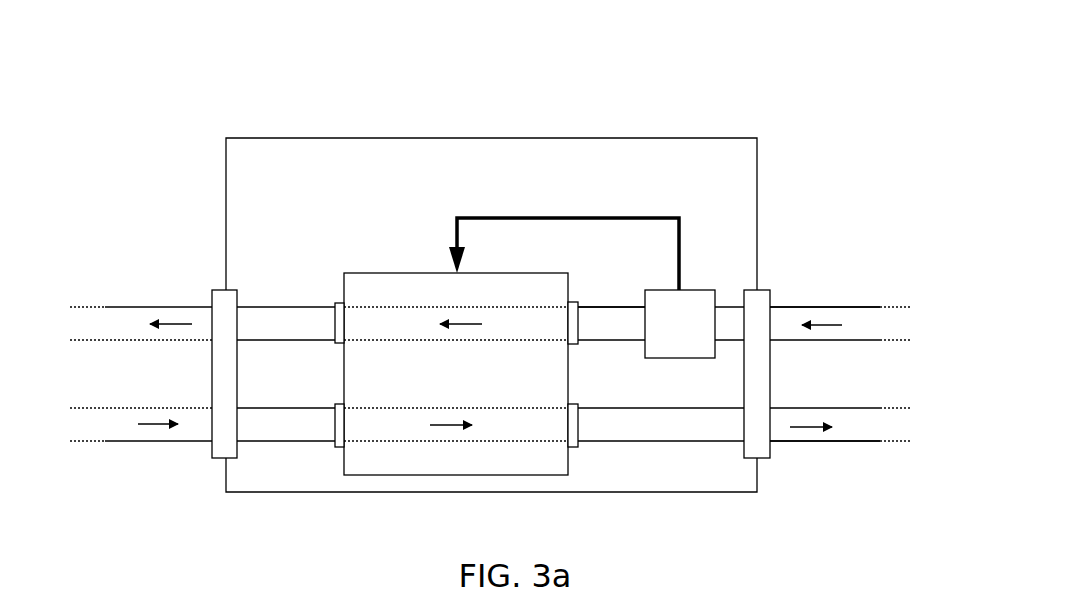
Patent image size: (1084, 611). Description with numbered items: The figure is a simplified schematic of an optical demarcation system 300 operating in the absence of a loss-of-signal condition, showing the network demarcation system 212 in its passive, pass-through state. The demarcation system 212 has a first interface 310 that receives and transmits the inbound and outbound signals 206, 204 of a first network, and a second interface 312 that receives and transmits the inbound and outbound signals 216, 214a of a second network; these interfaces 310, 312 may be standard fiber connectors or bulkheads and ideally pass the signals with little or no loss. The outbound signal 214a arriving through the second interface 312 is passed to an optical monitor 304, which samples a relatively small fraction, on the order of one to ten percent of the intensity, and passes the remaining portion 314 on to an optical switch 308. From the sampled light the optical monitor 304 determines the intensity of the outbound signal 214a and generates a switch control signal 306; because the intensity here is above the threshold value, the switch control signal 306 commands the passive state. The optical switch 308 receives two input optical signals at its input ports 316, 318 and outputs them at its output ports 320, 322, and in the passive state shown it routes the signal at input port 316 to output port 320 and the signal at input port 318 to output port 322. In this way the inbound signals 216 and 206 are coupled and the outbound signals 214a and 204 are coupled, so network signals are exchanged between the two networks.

The system 300 is at (847, 96).
The outbound signal of the first network 204 is at (105, 306).
The inbound signal of the first network 206 is at (106, 442).
The network demarcation system 212 is at (517, 138).
The outbound signal of the second network 214a is at (877, 307).
The inbound signal of the second network 216 is at (877, 442).
The optical monitor 304 is at (707, 290).
The switch control signal 306 is at (610, 218).
The optical switch 308 is at (382, 273).
The first interface 310 is at (220, 290).
The second interface 312 is at (770, 290).
The remaining portion of the outbound signal 314 is at (623, 307).
The input port 316 is at (573, 302).
The input port 318 is at (337, 404).
The output port 320 is at (333, 303).
The output port 322 is at (573, 404).